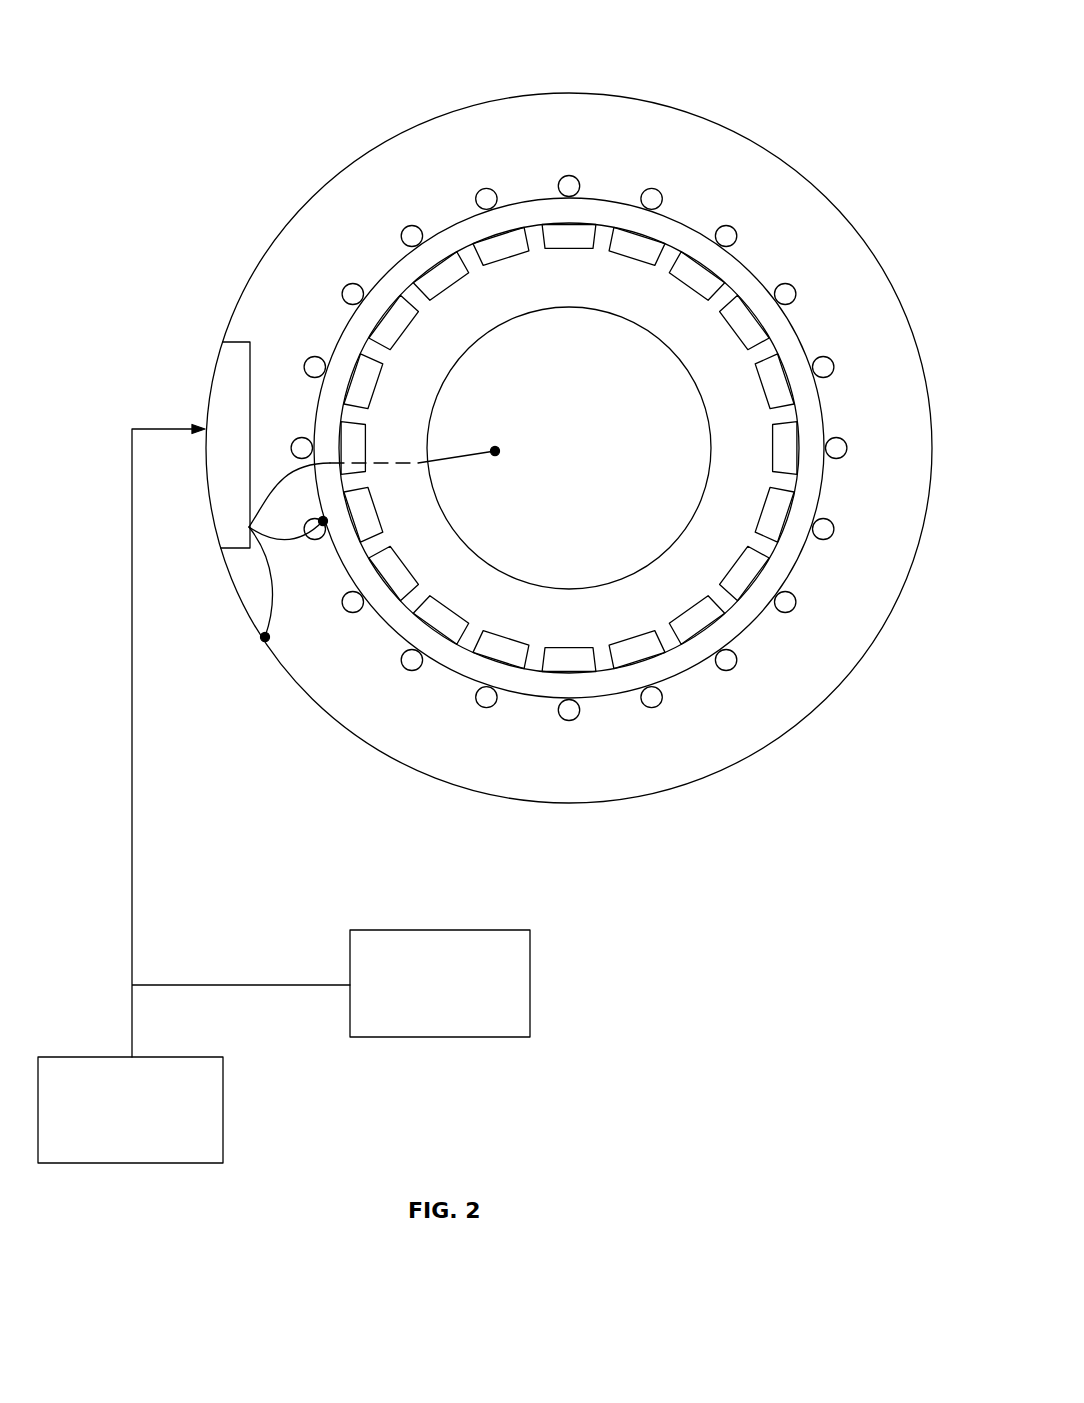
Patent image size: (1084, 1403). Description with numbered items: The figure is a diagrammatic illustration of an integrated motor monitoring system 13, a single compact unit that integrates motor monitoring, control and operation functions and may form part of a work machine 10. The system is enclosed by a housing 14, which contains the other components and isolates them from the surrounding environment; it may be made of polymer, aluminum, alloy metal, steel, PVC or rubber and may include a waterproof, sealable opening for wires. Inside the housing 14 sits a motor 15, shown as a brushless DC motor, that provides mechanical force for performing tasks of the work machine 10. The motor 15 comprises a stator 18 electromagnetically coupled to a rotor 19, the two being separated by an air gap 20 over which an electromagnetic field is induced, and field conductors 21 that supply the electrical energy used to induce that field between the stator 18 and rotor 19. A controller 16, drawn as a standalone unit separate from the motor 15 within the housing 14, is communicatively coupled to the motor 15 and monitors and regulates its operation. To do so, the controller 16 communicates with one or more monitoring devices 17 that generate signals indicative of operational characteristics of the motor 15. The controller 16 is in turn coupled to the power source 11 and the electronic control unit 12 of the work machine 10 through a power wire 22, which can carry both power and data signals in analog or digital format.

The work machine 10 is at (218, 88).
The power source 11 is at (144, 1120).
The electronic control unit 12 is at (453, 995).
The integrated motor monitoring system 13 is at (783, 764).
The housing 14 is at (760, 147).
The motor 15 is at (688, 163).
The controller 16 is at (240, 454).
The monitoring devices 17 is at (495, 451).
The stator 18 is at (803, 553).
The rotor 19 is at (580, 455).
The air gap 20 is at (450, 351).
The field conductors 21 is at (472, 186).
The power wire 22 is at (132, 637).